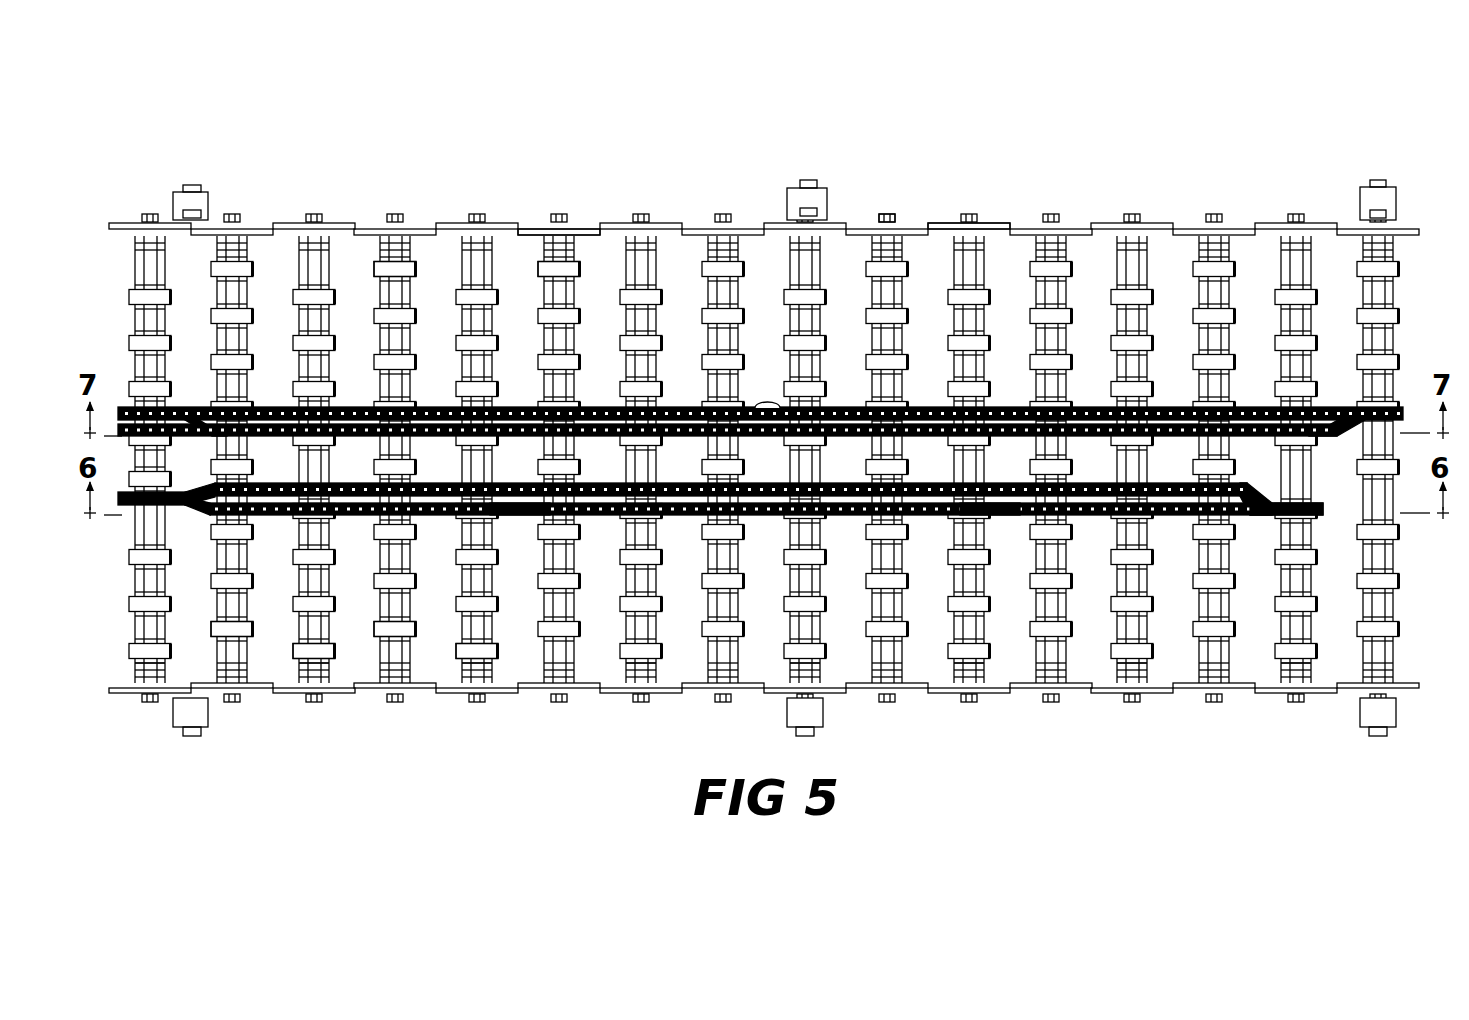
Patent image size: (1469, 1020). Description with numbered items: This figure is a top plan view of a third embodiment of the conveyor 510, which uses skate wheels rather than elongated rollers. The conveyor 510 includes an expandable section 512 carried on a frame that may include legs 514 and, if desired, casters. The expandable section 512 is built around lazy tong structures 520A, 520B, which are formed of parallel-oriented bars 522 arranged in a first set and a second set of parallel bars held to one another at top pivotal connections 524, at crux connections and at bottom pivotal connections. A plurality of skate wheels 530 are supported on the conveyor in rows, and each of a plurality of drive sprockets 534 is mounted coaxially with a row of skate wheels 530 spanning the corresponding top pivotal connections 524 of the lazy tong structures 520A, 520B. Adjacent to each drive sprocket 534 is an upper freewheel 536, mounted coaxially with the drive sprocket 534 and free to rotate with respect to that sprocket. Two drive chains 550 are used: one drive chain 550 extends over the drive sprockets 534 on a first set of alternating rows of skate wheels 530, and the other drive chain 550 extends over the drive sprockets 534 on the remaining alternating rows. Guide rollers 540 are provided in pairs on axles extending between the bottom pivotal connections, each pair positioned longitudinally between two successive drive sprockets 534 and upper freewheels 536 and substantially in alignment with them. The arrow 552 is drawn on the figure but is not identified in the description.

The conveyor 510 is at (417, 158).
The expandable section 512 is at (537, 209).
The legs 514 is at (199, 199).
The lazy tong structure 520A is at (586, 213).
The lazy tong structure 520B is at (617, 695).
The parallel-oriented bars 522 is at (940, 226).
The top pivotal connections 524 is at (888, 214).
The skate wheels 530 is at (548, 268).
The drive sprockets 534 is at (940, 478).
The upper freewheel 536 is at (990, 516).
The guide rollers 540 is at (1240, 517).
The drive chains 550 is at (522, 517).
The direction of travel arrow 552 is at (1070, 140).